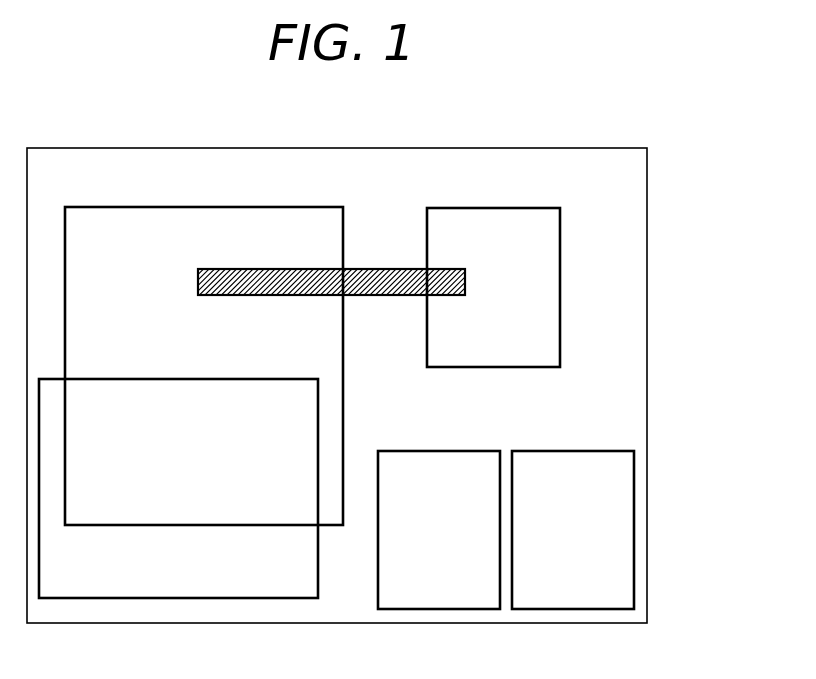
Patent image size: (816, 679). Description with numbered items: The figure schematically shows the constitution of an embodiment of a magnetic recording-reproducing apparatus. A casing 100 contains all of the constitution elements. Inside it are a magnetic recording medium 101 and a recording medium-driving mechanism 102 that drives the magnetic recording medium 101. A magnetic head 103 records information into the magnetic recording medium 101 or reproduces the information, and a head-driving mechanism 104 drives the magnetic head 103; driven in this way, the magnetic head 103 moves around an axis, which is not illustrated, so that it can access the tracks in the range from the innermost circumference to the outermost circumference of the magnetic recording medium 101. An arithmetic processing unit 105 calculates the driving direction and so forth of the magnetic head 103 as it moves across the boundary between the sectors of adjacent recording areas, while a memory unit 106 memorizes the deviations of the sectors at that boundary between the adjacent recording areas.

The casing 100 is at (647, 385).
The magnetic recording medium 101 is at (146, 300).
The recording medium-driving mechanism 102 is at (158, 578).
The magnetic head 103 is at (372, 277).
The head-driving mechanism 104 is at (513, 340).
The arithmetic processing unit 105 is at (457, 548).
The memory unit 106 is at (591, 548).